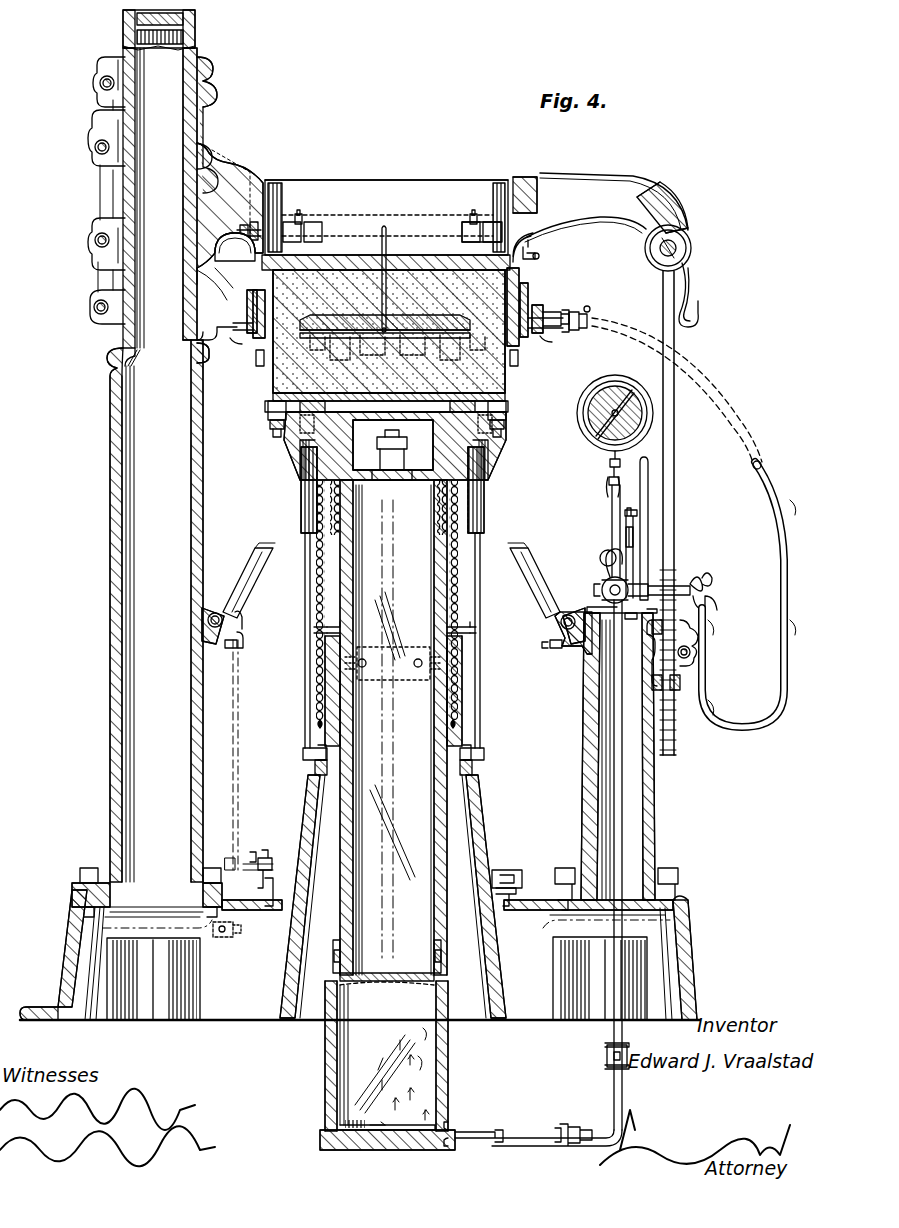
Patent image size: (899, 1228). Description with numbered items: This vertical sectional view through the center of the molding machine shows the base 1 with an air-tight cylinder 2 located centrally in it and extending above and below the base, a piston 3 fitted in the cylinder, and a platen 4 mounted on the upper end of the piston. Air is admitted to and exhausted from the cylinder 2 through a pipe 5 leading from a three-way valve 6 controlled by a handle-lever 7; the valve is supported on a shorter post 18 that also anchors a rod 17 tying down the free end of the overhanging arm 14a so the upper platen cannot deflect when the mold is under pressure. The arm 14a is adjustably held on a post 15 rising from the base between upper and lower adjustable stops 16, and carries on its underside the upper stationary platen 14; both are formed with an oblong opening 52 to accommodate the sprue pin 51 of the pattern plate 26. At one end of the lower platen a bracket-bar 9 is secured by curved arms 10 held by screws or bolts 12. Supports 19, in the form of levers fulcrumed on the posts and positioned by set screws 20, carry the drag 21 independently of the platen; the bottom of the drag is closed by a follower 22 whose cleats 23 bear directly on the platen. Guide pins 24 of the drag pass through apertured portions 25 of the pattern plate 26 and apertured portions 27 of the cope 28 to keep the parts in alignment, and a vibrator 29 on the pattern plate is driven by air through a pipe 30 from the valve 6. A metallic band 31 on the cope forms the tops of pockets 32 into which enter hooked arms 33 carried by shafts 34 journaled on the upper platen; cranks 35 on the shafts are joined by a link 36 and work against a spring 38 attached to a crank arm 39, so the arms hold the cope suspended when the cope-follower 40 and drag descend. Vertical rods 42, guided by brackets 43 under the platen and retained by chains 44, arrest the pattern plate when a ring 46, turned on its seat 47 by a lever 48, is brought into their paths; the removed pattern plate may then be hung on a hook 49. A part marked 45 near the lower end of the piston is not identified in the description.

The base 1 is at (218, 990).
The air-tight cylinder 2 is at (450, 1038).
The piston 3 is at (423, 857).
The platen 4 is at (388, 455).
The pipe 5 is at (604, 765).
The three-way valve 6 is at (603, 582).
The handle-lever 7 is at (648, 498).
The bracket-bar 9 is at (520, 358).
The curved arms 10 is at (512, 408).
The screws or bolts 12 is at (508, 428).
The upper stationary platen 14 is at (252, 272).
The overhanging arm 14a is at (292, 198).
The post 15 is at (112, 478).
The adjustable stops 16 is at (210, 80).
The rod 17 is at (672, 552).
The second post 18 is at (652, 806).
The supports 19 is at (255, 555).
The set screws 20 is at (242, 632).
The drag 21 is at (512, 398).
The follower 22 is at (287, 420).
The cleats 23 is at (470, 430).
The guide pins 24 is at (597, 328).
The apertured portions 25 is at (575, 322).
The pattern plate 26 is at (541, 333).
The apertured portions 27 is at (555, 322).
The cope 28 is at (528, 282).
The vibrator 29 is at (535, 319).
The pipe 30 is at (778, 572).
The metallic band 31 is at (478, 226).
The pockets 32 is at (508, 190).
The hooked arms 33 is at (300, 234).
The shafts 34 is at (418, 212).
The cranks 35 is at (545, 230).
The link 36 is at (540, 253).
The spring 38 is at (225, 240).
The crank arm 39 is at (228, 258).
The cope-follower 40 is at (352, 262).
The rods 42 is at (305, 700).
The brackets 43 is at (300, 510).
The chains 44 is at (316, 598).
The piston bottom 45 is at (448, 988).
The ring 46 is at (262, 858).
The seat 47 is at (257, 975).
The lever 48 is at (243, 750).
The hook 49 is at (692, 300).
The sprue pin 51 is at (383, 228).
The oblong opening 52 is at (432, 250).